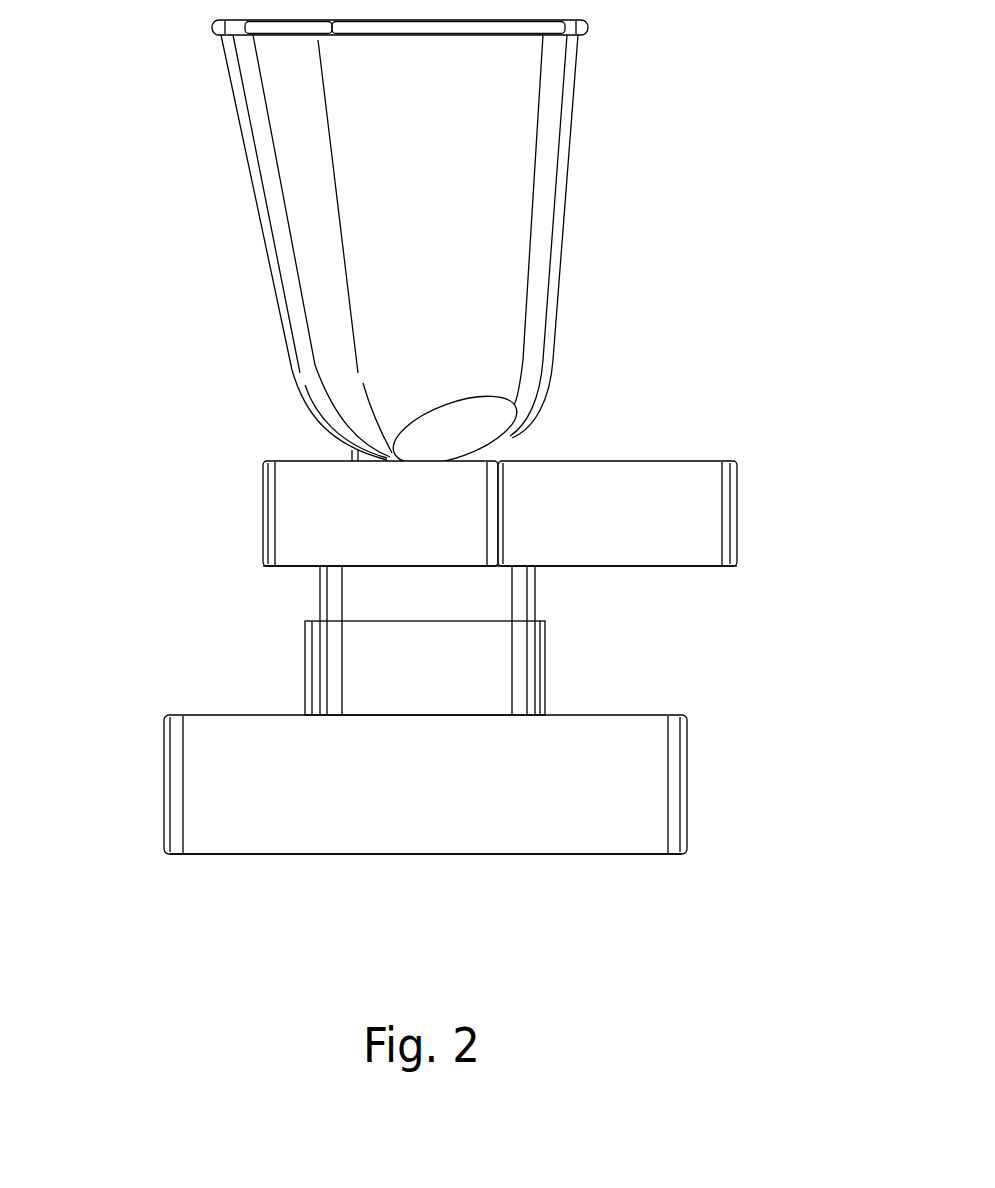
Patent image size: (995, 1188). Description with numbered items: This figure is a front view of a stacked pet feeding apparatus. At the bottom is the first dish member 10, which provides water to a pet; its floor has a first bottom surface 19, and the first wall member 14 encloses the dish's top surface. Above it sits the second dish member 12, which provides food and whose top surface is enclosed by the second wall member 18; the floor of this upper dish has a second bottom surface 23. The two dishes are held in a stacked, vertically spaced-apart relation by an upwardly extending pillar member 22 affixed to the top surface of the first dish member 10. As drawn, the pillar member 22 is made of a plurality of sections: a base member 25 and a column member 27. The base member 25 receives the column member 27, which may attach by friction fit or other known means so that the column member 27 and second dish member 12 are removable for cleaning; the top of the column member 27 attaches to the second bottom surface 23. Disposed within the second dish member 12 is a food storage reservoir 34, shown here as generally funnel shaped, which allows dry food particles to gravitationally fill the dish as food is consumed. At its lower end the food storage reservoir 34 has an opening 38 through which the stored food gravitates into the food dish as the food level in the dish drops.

The first dish member 10 is at (510, 816).
The second dish member 12 is at (567, 539).
The first wall member 14 is at (434, 792).
The second wall member 18 is at (632, 522).
The first bottom surface 19 is at (520, 854).
The pillar member 22 is at (363, 640).
The second bottom surface 23 is at (635, 566).
The base member 25 is at (540, 690).
The column member 27 is at (535, 593).
The food storage reservoir 34 is at (431, 196).
The opening 38 is at (477, 427).